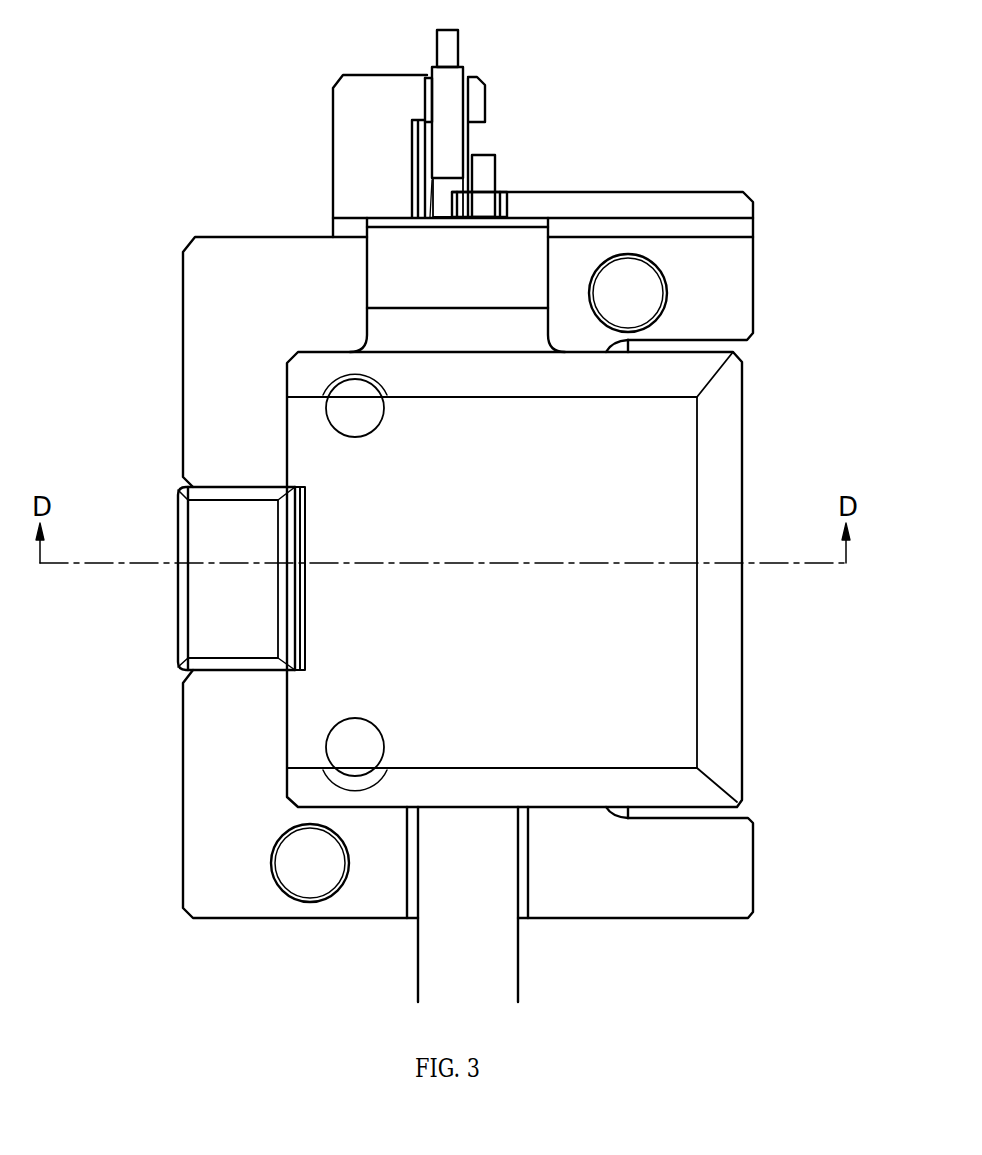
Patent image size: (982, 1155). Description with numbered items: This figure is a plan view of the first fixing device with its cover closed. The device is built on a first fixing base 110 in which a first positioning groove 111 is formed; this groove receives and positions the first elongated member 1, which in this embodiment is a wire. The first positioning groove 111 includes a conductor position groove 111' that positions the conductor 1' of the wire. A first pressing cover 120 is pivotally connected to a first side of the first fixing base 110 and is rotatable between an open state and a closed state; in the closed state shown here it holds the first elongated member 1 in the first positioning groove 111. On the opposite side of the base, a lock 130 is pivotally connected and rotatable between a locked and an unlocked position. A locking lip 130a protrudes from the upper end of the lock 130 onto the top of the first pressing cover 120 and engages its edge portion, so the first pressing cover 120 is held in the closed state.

The first fixing base 110 is at (728, 862).
The first positioning groove 111 is at (565, 899).
The conductor position groove 111' is at (340, 76).
The first pressing cover 120 is at (580, 652).
The lock 130 is at (217, 615).
The locking lip 130a is at (290, 487).
The first elongated member 1 is at (421, 904).
The conductor 1' is at (505, 123).